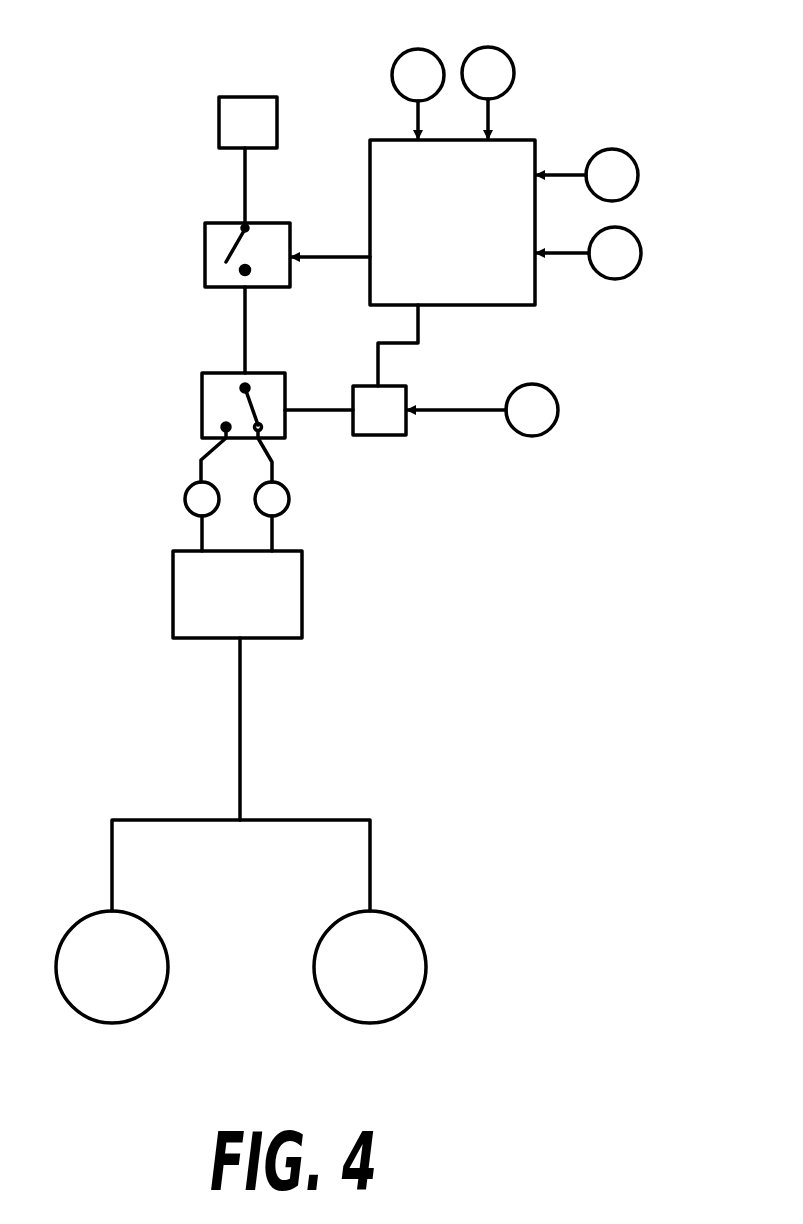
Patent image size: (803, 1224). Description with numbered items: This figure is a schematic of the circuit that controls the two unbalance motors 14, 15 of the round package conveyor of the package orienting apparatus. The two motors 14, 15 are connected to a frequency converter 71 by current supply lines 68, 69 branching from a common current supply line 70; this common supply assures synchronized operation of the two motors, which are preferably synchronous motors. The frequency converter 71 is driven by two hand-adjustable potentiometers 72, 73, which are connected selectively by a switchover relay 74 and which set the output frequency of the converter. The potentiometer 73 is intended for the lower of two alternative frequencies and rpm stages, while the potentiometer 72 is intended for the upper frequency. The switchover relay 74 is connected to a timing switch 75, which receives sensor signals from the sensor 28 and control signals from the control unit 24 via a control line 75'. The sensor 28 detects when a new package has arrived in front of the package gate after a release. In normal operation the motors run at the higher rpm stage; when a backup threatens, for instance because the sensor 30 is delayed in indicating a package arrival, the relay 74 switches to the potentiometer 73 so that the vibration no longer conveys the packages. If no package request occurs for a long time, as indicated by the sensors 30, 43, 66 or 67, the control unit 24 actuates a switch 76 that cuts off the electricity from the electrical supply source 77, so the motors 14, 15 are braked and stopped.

The unbalance motor 14 is at (146, 1012).
The unbalance motor 15 is at (403, 1012).
The control unit 24 is at (452, 222).
The sensor 28 is at (550, 432).
The sensor 30 is at (500, 50).
The sensor 43 is at (408, 50).
The sensor 66 is at (638, 175).
The sensor 67 is at (632, 275).
The current supply line 68 is at (190, 820).
The current supply line 69 is at (340, 820).
The common current supply line 70 is at (241, 765).
The frequency converter 71 is at (302, 612).
The potentiometer 72 is at (289, 499).
The potentiometer 73 is at (185, 499).
The switchover relay 74 is at (202, 408).
The timing switch 75 is at (392, 440).
The control line 75' is at (432, 345).
The switch 76 is at (205, 268).
The electrical supply source 77 is at (219, 110).